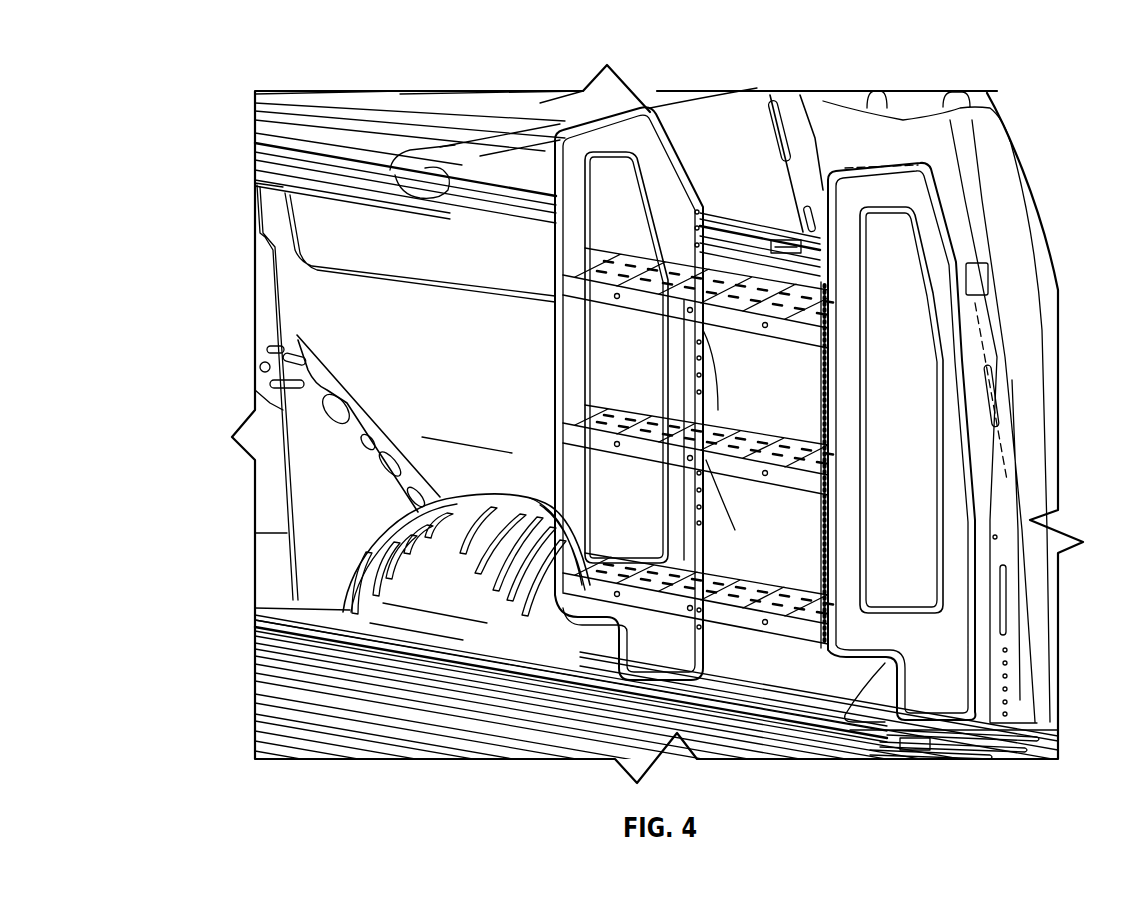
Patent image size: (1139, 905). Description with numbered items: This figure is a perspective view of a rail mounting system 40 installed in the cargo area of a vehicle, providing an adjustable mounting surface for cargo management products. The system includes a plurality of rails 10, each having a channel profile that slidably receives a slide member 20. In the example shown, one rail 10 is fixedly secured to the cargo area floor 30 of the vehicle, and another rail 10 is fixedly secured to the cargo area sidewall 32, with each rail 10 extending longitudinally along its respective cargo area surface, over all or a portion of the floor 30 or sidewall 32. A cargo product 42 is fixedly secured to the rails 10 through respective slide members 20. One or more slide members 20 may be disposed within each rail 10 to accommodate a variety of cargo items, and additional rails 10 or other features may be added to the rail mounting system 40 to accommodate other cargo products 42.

The rail 10 is at (457, 195).
The slide member 20 is at (787, 238).
The cargo area floor 30 is at (740, 735).
The cargo area sidewall 32 is at (752, 131).
The rail mounting system 40 is at (1060, 411).
The cargo product 42 is at (910, 408).